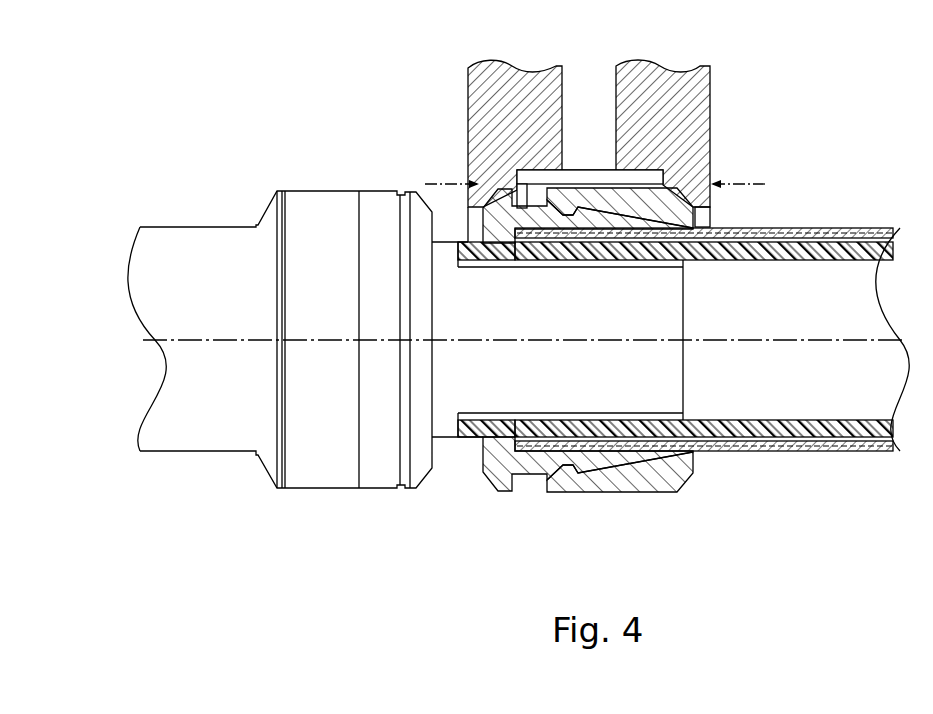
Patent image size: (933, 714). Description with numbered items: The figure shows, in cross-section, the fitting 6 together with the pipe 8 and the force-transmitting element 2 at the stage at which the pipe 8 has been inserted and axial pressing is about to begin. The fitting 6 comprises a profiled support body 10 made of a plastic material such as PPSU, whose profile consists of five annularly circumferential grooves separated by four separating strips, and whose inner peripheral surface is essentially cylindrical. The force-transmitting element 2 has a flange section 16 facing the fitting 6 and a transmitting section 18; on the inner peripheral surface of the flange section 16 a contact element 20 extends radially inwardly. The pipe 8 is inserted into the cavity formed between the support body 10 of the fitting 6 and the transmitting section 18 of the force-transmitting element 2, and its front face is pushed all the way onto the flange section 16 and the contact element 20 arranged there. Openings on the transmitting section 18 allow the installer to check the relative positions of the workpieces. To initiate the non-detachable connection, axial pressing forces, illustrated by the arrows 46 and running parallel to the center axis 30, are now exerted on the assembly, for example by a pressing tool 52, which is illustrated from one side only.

The force-transmitting element 2 is at (482, 498).
The fitting 6 is at (462, 457).
The pipe 8 is at (857, 183).
The support body 10 is at (638, 417).
The flange section 16 is at (506, 488).
The transmitting section 18 is at (598, 474).
The contact element 20 is at (509, 420).
The center axis 30 is at (762, 338).
The arrows 46 is at (738, 184).
The pressing tool 52 is at (490, 100).